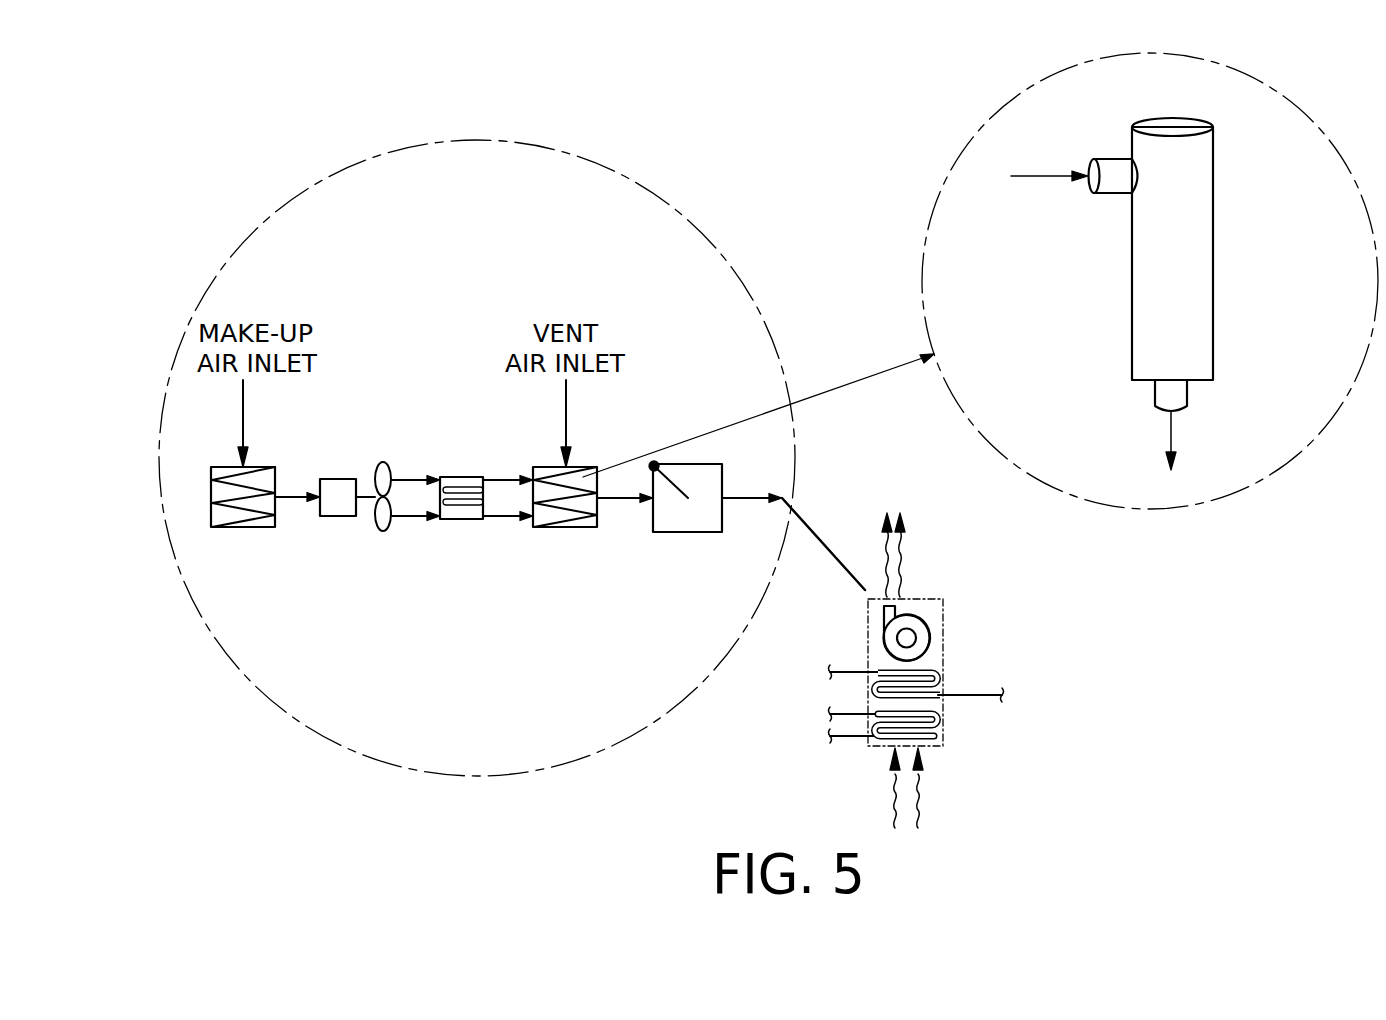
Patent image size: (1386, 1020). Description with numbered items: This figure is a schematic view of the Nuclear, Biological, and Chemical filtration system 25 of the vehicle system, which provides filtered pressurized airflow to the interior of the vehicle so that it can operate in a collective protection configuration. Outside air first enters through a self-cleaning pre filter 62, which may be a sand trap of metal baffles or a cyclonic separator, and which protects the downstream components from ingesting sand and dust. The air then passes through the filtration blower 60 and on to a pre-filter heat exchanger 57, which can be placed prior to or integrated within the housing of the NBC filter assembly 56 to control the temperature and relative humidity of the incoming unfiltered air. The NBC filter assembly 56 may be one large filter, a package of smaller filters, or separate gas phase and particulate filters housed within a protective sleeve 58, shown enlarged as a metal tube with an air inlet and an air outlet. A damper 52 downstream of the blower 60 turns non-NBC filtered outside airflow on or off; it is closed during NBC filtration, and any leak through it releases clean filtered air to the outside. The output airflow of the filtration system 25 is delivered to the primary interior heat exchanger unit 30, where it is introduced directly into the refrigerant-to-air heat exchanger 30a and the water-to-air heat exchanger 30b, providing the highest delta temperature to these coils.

The NBC filtration system 25 is at (592, 190).
The self-cleaning pre filter 62 is at (238, 528).
The filtration blower 60 is at (330, 516).
The pre-filter heat exchanger 57 is at (453, 519).
The NBC filter assembly 56 is at (552, 528).
The damper 52 is at (673, 532).
The protective sleeve 58 is at (1190, 222).
The primary interior heat exchanger unit 30 is at (945, 603).
The refrigerant-to-air heat exchanger 30a is at (937, 672).
The water-to-air heat exchanger 30b is at (937, 736).